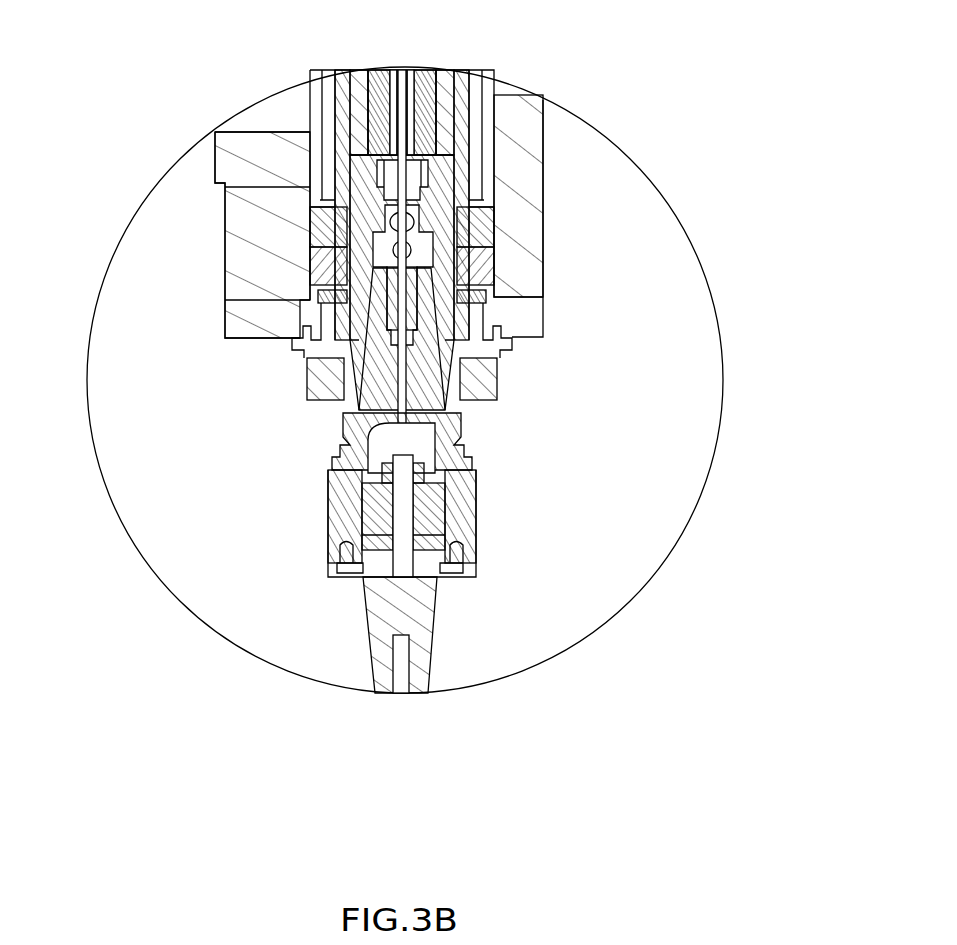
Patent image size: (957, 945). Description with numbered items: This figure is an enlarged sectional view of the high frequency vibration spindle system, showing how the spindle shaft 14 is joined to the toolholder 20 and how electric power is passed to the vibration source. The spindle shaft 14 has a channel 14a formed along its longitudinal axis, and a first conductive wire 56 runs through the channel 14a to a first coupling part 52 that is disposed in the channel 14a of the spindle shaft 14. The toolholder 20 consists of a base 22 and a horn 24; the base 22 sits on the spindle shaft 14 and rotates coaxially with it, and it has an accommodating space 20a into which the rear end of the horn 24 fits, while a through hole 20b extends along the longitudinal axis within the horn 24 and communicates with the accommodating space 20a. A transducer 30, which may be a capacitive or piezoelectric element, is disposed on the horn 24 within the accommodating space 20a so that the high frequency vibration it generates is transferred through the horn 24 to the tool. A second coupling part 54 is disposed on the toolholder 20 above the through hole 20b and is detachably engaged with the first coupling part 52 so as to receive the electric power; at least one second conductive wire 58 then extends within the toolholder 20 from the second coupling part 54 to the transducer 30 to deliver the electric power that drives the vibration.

The spindle shaft 14 is at (447, 80).
The channel 14a is at (432, 154).
The first coupling part 52 is at (415, 177).
The second coupling part 54 is at (432, 245).
The first conductive wire 56 is at (399, 76).
The second conductive wire 58 is at (400, 377).
The toolholder 20 is at (582, 574).
The accommodating space 20a is at (463, 435).
The through hole 20b is at (405, 397).
The base 22 is at (447, 553).
The horn 24 is at (433, 617).
The transducer 30 is at (328, 545).